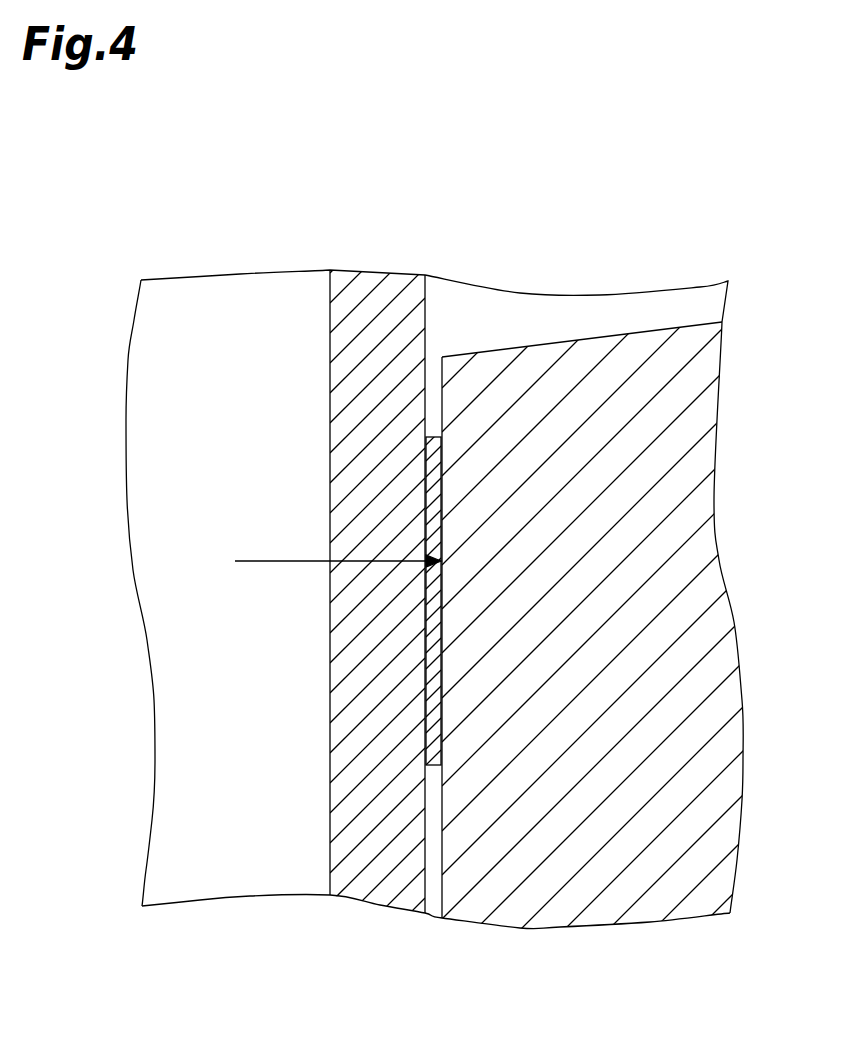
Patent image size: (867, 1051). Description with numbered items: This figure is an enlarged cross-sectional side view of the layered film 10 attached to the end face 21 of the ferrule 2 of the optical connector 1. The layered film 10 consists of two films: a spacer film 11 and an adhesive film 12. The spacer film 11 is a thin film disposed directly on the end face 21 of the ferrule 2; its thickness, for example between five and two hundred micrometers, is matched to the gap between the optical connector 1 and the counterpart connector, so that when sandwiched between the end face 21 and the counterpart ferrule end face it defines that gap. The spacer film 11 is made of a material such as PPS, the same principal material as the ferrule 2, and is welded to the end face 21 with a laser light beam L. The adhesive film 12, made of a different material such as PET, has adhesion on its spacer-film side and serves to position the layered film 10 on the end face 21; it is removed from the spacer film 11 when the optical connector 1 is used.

The optical connector 1 is at (608, 906).
The ferrule 2 is at (527, 895).
The layered film 10 is at (412, 570).
The spacer film 11 is at (445, 443).
The adhesive film 12 is at (394, 290).
The end face 21 is at (437, 880).
The laser light beam L is at (290, 563).